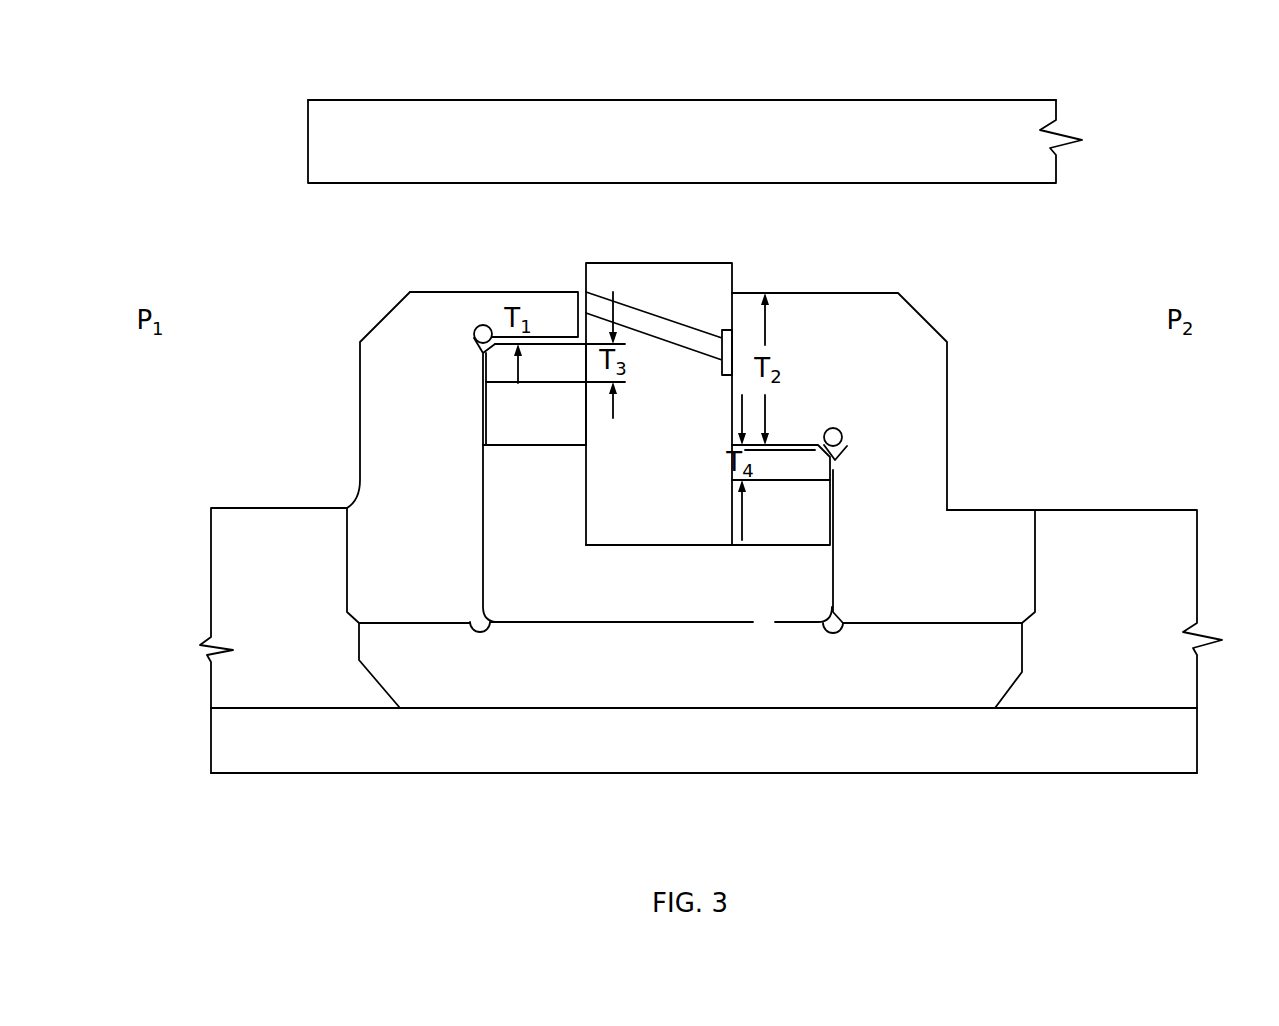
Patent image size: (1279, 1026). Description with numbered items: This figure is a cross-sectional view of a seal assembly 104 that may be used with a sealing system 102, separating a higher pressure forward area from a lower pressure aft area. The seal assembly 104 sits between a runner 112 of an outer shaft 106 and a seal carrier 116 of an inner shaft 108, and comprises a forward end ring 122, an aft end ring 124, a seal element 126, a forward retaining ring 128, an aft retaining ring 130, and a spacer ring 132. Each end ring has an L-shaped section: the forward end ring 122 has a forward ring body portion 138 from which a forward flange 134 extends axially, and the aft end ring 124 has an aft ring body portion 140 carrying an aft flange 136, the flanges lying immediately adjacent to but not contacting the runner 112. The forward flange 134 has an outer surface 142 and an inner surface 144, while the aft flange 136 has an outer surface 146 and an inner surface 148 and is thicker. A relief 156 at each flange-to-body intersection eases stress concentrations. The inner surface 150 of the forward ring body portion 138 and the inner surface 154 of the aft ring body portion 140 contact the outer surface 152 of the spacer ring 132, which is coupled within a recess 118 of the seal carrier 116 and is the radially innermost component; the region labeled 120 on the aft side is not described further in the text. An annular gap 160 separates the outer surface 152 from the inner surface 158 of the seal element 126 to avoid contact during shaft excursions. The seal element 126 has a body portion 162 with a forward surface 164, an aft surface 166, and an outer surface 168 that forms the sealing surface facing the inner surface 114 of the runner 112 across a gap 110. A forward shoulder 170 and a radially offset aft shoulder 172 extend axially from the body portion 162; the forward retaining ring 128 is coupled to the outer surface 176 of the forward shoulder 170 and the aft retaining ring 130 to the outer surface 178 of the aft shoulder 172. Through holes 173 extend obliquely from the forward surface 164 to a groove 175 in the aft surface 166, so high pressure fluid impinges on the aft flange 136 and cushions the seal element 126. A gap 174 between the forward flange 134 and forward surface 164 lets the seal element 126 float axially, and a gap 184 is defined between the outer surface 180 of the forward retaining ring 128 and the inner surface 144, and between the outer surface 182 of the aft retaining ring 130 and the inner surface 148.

The sealing system 102 is at (1130, 110).
The seal assembly 104 is at (190, 188).
The outer shaft 106 is at (560, 100).
The inner shaft 108 is at (273, 640).
The gap 110 is at (697, 195).
The runner 112 is at (888, 125).
The inner surface 114 is at (390, 183).
The seal carrier 116 is at (704, 740).
The recess 118 is at (960, 722).
The second region 120 is at (1084, 641).
The forward end ring 122 is at (370, 400).
The aft end ring 124 is at (918, 412).
The seal element 126 is at (659, 404).
The forward retaining ring 128 is at (536, 362).
The aft retaining ring 130 is at (781, 462).
The spacer ring 132 is at (690, 665).
The forward flange 134 is at (472, 305).
The aft flange 136 is at (822, 380).
The forward ring body portion 138 is at (380, 520).
The aft ring body portion 140 is at (1017, 555).
The outer surface 142 is at (415, 290).
The inner surface 144 is at (502, 310).
The outer surface 146 is at (893, 293).
The inner surface 148 is at (818, 442).
The inner surface 150 is at (380, 623).
The outer surface 152 is at (753, 622).
The inner surface 154 is at (975, 623).
The relief 156 is at (460, 337).
The inner surface 158 is at (663, 545).
The annular gap 160 is at (554, 586).
The body portion 162 is at (632, 493).
The forward surface 164 is at (583, 270).
The aft surface 166 is at (737, 270).
The outer surface 168 is at (613, 262).
The forward shoulder 170 is at (536, 394).
The aft shoulder 172 is at (708, 512).
The through hole 173 is at (680, 320).
The gap 174 is at (578, 282).
The groove 175 is at (740, 340).
The outer surface 176 is at (492, 360).
The outer surface 178 is at (833, 472).
The outer surface 180 is at (478, 347).
The outer surface 182 is at (833, 458).
The gap 184 is at (477, 347).